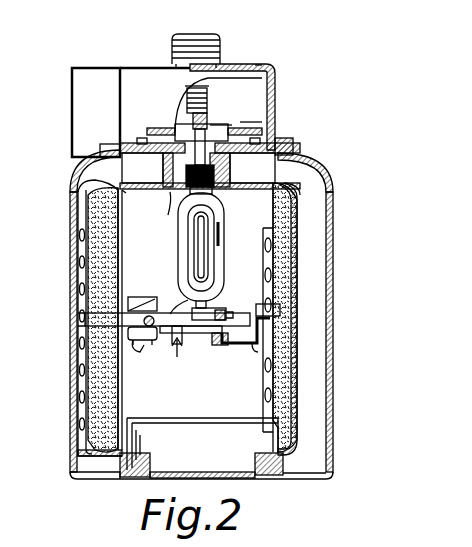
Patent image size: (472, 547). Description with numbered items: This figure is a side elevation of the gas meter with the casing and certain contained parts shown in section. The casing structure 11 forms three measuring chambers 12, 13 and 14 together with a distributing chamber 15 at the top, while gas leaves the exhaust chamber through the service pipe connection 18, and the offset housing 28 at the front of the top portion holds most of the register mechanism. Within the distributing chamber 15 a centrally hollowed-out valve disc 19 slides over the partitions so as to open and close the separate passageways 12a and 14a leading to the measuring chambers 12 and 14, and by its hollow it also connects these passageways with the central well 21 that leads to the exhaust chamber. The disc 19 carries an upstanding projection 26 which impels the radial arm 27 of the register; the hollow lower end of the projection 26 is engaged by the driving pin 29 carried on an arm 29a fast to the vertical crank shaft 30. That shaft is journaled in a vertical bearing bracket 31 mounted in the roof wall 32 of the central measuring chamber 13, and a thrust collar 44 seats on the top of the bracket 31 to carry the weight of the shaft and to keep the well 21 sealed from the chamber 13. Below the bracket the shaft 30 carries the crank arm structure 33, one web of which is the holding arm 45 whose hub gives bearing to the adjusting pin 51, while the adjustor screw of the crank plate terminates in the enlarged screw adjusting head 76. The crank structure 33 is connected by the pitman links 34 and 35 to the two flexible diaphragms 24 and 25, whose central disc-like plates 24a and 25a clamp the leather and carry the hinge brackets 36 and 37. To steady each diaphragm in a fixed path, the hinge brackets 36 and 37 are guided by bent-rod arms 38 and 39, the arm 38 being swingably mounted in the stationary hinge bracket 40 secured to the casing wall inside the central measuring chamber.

The casing structure 11 is at (130, 72).
The offset housing 28 is at (88, 80).
The service pipe connection 18 is at (222, 44).
The radial arm 27 is at (252, 66).
The distributing chamber 15 is at (218, 105).
The central well 21 is at (213, 127).
The valve disc 19 is at (262, 124).
The upstanding projection 26 is at (187, 108).
The arm 29a is at (175, 130).
The driving pin 29 is at (232, 190).
The passageway 12a is at (142, 168).
The passageway 14a is at (261, 160).
The measuring chamber 12 is at (84, 182).
The measuring chamber 14 is at (322, 180).
The flexible diaphragm 24 is at (74, 436).
The disc-like plate 24a is at (84, 396).
The measuring chamber 13 is at (134, 213).
The roof wall 32 is at (162, 190).
The thrust collar 44 is at (168, 206).
The vertical crank shaft 30 is at (201, 240).
The vertical bearing bracket 31 is at (222, 236).
The holding arm 45 is at (185, 298).
The adjusting pin 51 is at (243, 300).
The hinge bracket 36 is at (92, 322).
The bent-rod arm 38 is at (151, 297).
The stationary hinge bracket 40 is at (138, 352).
The pitman link 34 is at (174, 344).
The crank arm structure 33 is at (183, 356).
The pitman link 35 is at (228, 346).
The screw adjusting head 76 is at (214, 336).
The bent-rod arm 39 is at (258, 343).
The hinge bracket 37 is at (268, 290).
The disc-like plate 25a is at (298, 333).
The flexible diaphragm 25 is at (330, 347).